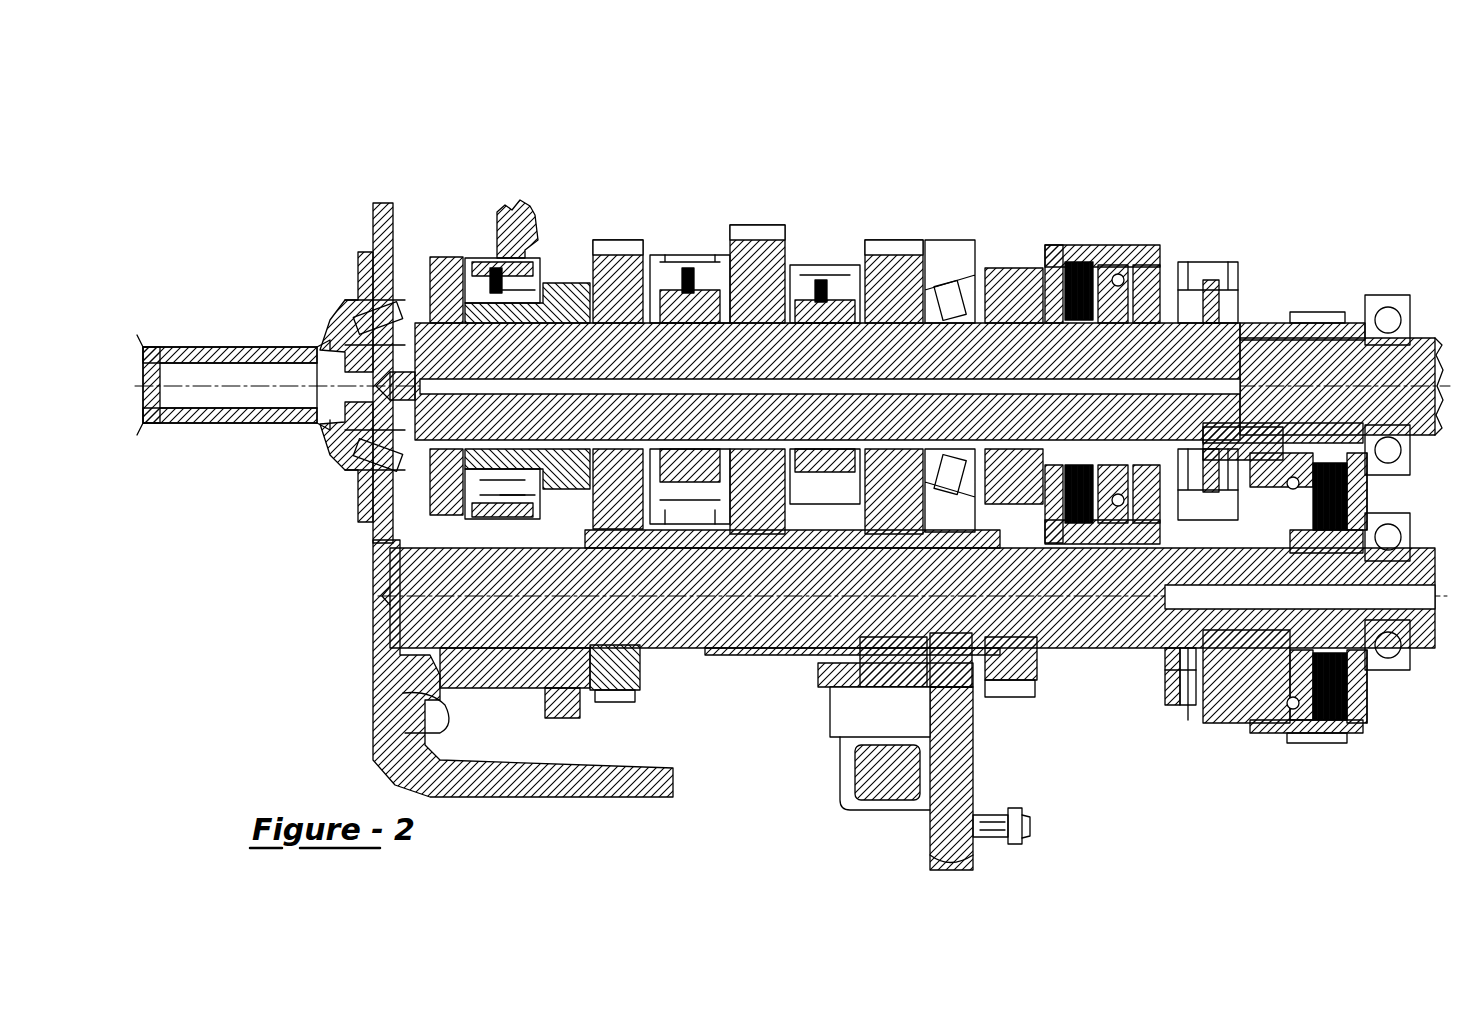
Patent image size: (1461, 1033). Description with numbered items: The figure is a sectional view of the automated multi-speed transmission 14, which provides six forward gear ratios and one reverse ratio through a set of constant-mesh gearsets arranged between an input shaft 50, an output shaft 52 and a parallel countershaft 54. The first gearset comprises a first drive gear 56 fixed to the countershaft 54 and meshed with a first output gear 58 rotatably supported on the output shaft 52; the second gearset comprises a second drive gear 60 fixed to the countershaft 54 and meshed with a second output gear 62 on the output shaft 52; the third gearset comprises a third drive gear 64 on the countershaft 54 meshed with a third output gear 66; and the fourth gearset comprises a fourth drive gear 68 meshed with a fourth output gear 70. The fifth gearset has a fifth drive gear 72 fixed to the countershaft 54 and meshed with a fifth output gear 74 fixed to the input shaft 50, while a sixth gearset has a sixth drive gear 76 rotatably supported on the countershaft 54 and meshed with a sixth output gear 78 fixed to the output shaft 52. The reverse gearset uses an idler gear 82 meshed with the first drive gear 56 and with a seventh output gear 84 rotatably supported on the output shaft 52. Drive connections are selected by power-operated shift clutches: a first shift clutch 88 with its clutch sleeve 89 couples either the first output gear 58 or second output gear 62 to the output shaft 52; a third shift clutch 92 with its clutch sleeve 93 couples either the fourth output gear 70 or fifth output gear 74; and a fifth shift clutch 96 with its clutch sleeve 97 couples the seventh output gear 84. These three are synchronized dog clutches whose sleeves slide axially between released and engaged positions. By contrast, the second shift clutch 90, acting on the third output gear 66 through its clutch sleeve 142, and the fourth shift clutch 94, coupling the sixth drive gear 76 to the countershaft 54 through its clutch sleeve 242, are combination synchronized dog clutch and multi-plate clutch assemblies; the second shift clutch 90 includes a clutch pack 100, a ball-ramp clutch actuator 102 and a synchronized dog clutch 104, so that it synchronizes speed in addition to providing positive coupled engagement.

The automated transmission 14 is at (1105, 135).
The input shaft 50 is at (228, 372).
The output shaft 52 is at (1420, 355).
The countershaft 54 is at (660, 625).
The first drive gear 56 is at (738, 645).
The first output gear 58 is at (757, 235).
The second drive gear 60 is at (608, 690).
The second output gear 62 is at (617, 250).
The third drive gear 64 is at (1008, 692).
The third output gear 66 is at (1005, 270).
The fourth drive gear 68 is at (570, 706).
The fourth output gear 70 is at (567, 290).
The fifth drive gear 72 is at (455, 700).
The fifth output gear 74 is at (452, 265).
The sixth drive gear 76 is at (1365, 712).
The sixth output gear 78 is at (1310, 320).
The idler gear 82 is at (890, 782).
The seventh output gear 84 is at (895, 248).
The first shift clutch 88 is at (690, 330).
The clutch sleeve 89 is at (662, 272).
The second shift clutch 90 is at (1205, 255).
The third shift clutch 92 is at (478, 195).
The clutch sleeve 93 is at (523, 255).
The fourth shift clutch 94 is at (1235, 737).
The fifth shift clutch 96 is at (830, 324).
The clutch sleeve 97 is at (815, 265).
The clutch pack 100 is at (1123, 347).
The ball-ramp clutch actuator 102 is at (1118, 255).
The synchronized dog clutch 104 is at (1157, 265).
The clutch sleeve 142 is at (1207, 270).
The clutch sleeve 242 is at (1205, 700).